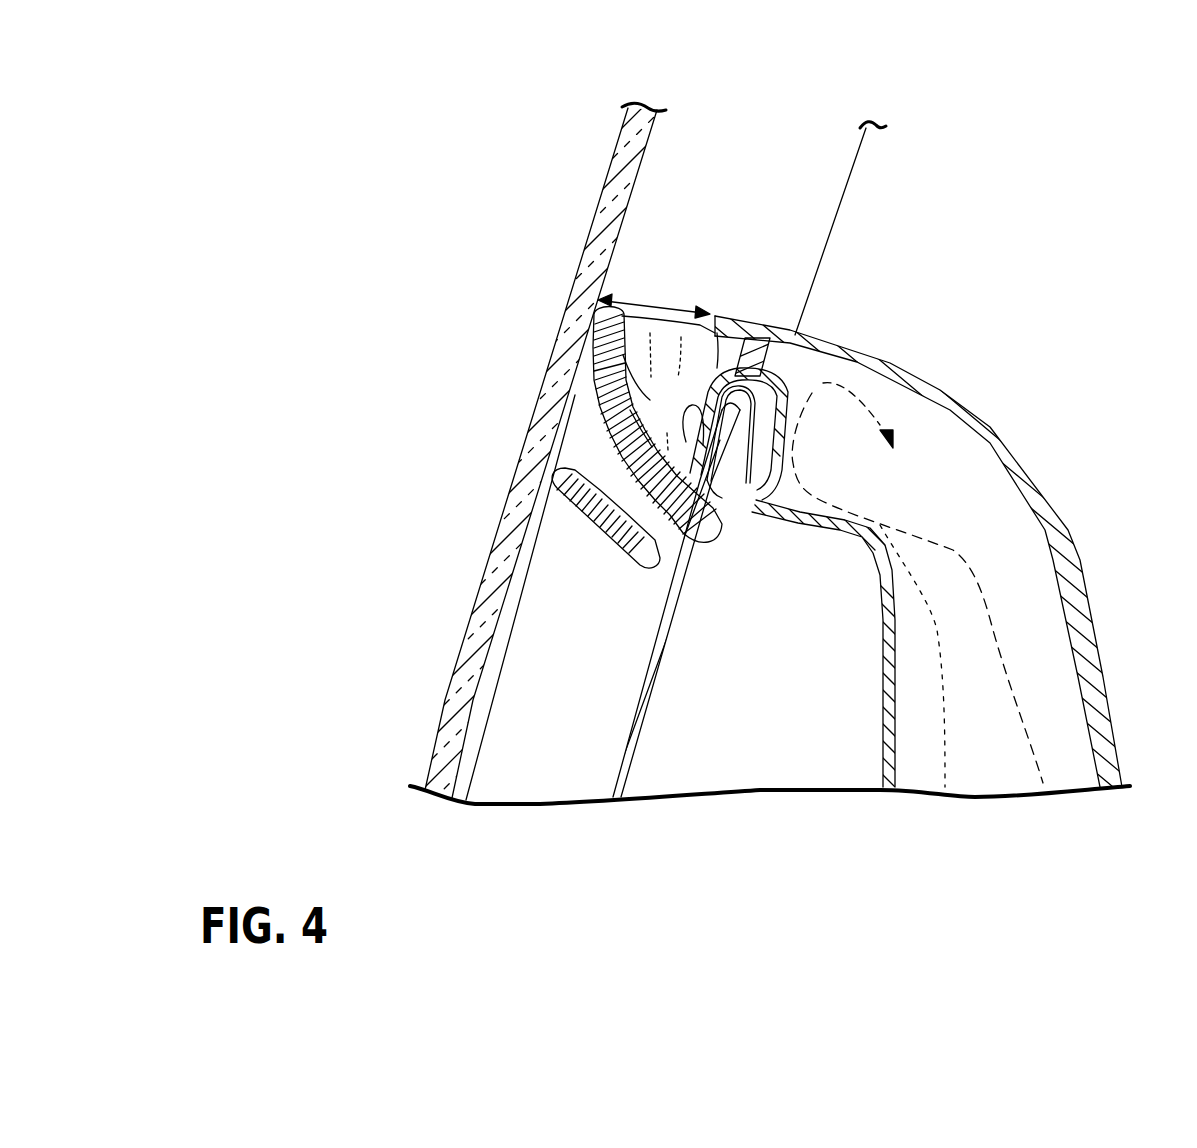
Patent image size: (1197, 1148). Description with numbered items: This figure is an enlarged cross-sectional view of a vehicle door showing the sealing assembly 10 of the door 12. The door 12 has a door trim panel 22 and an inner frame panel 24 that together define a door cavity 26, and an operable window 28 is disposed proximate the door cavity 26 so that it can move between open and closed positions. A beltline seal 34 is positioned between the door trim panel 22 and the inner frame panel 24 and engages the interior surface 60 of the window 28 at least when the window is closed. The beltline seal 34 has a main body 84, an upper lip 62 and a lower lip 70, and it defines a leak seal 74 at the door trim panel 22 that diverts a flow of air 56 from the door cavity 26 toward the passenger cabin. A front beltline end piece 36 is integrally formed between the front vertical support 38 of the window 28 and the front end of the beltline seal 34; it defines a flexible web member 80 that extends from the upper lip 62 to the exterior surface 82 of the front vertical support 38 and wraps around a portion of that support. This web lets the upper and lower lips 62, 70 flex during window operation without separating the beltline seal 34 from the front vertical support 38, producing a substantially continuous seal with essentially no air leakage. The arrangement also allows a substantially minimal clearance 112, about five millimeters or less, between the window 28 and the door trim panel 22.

The sealing assembly 10 is at (891, 357).
The door 12 is at (456, 402).
The door trim panel 22 is at (1067, 533).
The inner frame panel 24 is at (647, 662).
The door cavity 26 is at (1031, 608).
The operable window 28 is at (605, 192).
The beltline seal 34 is at (725, 316).
The front beltline end piece 36 is at (700, 482).
The front vertical support 38 is at (807, 233).
The flow of air 56 is at (870, 503).
The interior surface 60 is at (500, 598).
The upper lip 62 is at (603, 410).
The lower lip 70 is at (587, 515).
The leak seal 74 is at (820, 360).
The flexible web member 80 is at (595, 355).
The exterior surface 82 is at (637, 290).
The main body 84 is at (705, 493).
The clearance 112 is at (667, 305).